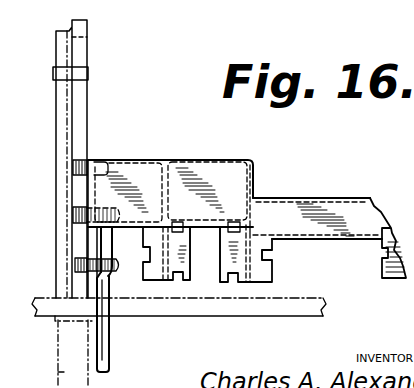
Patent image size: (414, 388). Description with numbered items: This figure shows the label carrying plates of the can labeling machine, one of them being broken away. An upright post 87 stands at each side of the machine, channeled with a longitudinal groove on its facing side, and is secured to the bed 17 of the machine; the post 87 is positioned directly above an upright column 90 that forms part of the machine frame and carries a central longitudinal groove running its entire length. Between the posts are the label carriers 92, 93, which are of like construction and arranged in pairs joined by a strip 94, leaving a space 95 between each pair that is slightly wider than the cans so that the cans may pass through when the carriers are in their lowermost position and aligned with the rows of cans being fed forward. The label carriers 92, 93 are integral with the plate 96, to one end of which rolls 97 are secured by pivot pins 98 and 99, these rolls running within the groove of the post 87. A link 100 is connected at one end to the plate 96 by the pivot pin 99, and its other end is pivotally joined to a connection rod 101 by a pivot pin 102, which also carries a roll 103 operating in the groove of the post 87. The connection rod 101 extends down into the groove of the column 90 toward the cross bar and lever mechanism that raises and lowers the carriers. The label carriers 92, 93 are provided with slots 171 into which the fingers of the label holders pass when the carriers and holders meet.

The bed 17 is at (272, 304).
The post 87 is at (56, 97).
The upright column 90 is at (58, 373).
The label carrier 92 is at (250, 282).
The label carrier 93 is at (386, 279).
The strip 94 is at (309, 199).
The space 95 is at (205, 254).
The plate 96 is at (191, 170).
The roll 97 is at (74, 164).
The pivot pin 98 is at (96, 163).
The pivot pin 99 is at (101, 212).
The link 100 is at (108, 242).
The connection rod 101 is at (110, 362).
The pivot pin 102 is at (108, 272).
The roll 103 is at (78, 266).
The slot 171 is at (268, 254).